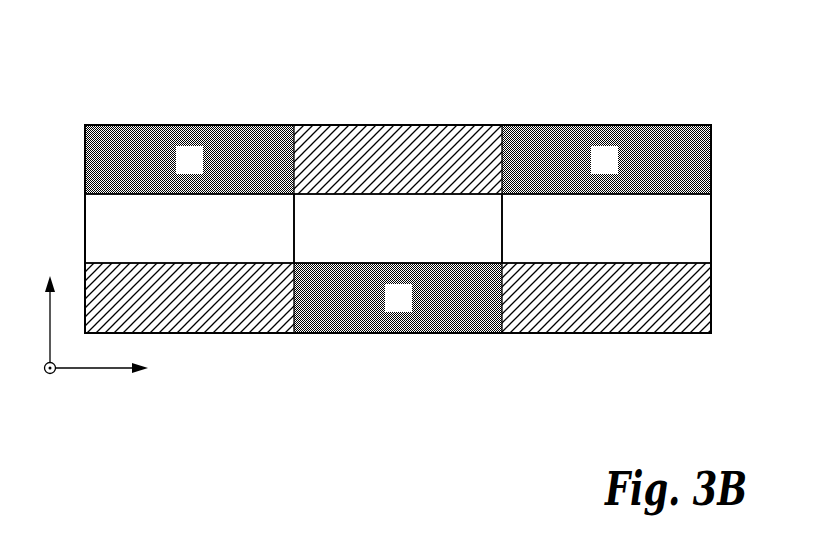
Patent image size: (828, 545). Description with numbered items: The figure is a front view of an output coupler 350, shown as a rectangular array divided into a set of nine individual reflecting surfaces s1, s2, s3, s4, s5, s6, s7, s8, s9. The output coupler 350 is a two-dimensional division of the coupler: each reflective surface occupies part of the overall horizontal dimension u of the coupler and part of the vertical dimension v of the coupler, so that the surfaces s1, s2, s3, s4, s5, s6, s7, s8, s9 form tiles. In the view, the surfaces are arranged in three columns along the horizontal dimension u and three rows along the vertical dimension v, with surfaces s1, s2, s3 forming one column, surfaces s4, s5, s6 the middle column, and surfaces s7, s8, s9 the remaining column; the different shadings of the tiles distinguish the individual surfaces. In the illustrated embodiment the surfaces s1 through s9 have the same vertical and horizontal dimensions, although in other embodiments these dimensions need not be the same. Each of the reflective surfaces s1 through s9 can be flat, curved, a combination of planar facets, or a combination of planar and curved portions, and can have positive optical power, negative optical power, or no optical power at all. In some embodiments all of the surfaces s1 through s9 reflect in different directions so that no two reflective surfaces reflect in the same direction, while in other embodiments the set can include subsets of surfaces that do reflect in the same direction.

The output coupler 350 is at (100, 68).
The reflecting surface s1 is at (189, 159).
The reflecting surface s2 is at (189, 228).
The reflecting surface s3 is at (189, 298).
The reflecting surface s4 is at (398, 159).
The reflecting surface s5 is at (398, 228).
The reflecting surface s6 is at (398, 298).
The reflecting surface s7 is at (606, 159).
The reflecting surface s8 is at (606, 228).
The reflecting surface s9 is at (606, 298).
The horizontal dimension u is at (109, 367).
The vertical dimension v is at (50, 314).